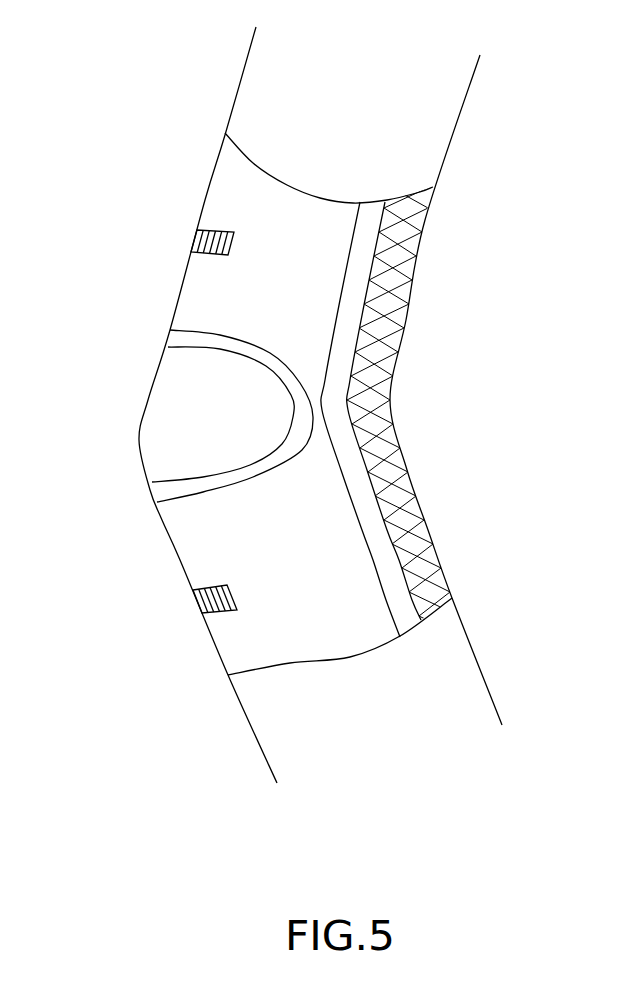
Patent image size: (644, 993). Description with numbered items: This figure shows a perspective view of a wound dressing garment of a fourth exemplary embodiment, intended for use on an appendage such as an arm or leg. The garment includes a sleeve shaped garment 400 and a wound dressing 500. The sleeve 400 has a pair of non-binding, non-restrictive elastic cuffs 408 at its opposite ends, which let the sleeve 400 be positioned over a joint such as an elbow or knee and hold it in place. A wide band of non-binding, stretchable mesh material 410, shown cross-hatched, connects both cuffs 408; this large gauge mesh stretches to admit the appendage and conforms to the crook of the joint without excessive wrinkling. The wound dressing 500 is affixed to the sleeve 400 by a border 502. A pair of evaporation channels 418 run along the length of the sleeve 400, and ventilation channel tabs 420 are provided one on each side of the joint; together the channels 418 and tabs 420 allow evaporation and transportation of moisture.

The sleeve shaped garment 400 is at (495, 270).
The elastic cuffs 408 is at (410, 192).
The stretchable mesh material 410 is at (423, 548).
The evaporation channels 418 is at (373, 202).
The ventilation channel tabs 420 is at (195, 238).
The wound dressing 500 is at (165, 413).
The border 502 is at (310, 393).